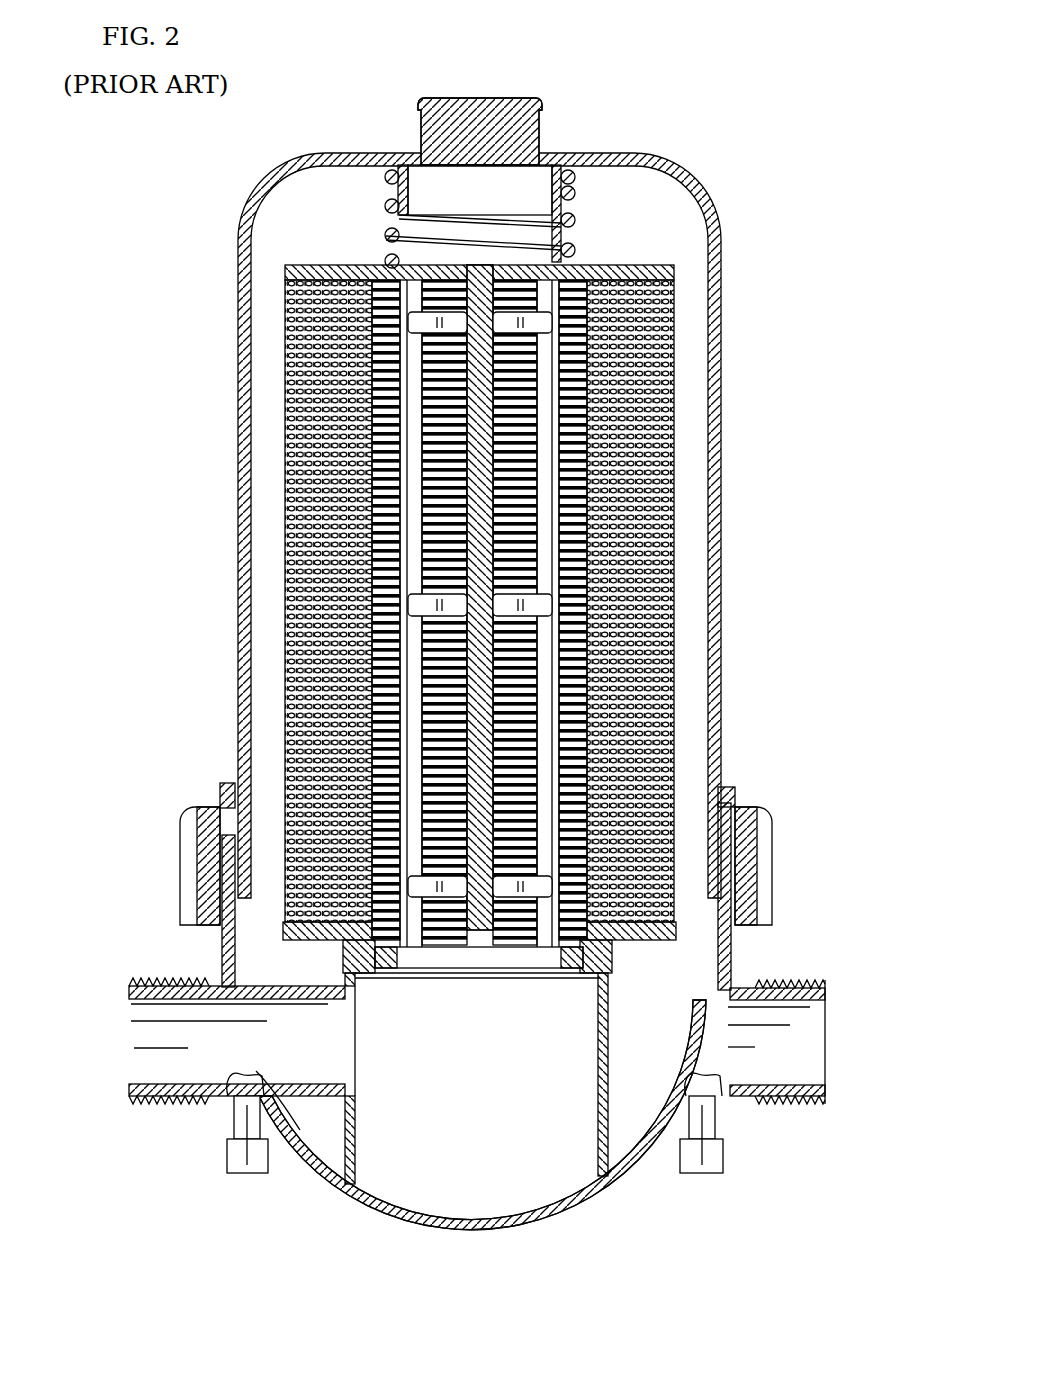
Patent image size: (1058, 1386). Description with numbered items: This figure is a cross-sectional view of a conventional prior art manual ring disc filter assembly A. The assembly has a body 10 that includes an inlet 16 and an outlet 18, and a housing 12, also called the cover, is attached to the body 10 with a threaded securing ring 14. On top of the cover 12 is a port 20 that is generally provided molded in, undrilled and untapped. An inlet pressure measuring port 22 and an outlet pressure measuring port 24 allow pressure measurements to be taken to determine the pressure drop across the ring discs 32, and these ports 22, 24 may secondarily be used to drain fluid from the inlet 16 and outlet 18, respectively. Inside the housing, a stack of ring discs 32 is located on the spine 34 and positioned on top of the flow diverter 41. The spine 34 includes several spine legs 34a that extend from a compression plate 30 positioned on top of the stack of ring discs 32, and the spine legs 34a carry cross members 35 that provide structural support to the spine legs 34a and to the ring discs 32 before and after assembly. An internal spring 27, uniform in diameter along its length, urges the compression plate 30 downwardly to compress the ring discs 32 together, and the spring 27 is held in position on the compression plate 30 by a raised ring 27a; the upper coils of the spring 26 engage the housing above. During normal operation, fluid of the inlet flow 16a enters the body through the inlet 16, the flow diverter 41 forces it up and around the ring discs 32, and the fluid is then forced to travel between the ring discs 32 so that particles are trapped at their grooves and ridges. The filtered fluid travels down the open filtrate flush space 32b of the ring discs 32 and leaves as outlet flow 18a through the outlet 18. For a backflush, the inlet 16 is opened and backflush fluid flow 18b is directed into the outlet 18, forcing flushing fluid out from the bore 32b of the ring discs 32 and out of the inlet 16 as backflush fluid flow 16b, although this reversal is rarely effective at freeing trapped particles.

The body 10 is at (362, 1195).
The housing 12 is at (713, 453).
The threaded securing ring 14 is at (745, 837).
The inlet 16 is at (830, 1100).
The inlet flow 16a is at (927, 1025).
The backflush fluid flow 16b is at (918, 1063).
The outlet 18 is at (155, 1098).
The outlet flow 18a is at (105, 1022).
The backflush fluid flow 18b is at (97, 1060).
The port 20 is at (505, 118).
The inlet pressure measuring port 22 is at (699, 1175).
The outlet pressure measuring port 24 is at (239, 1174).
The spring 26 is at (386, 200).
The internal spring 27 is at (380, 237).
The raised ring 27a is at (566, 262).
The compression plate 30 is at (643, 267).
The ring discs 32 is at (630, 530).
The filtrate flush space 32b is at (570, 407).
The spine 34 is at (268, 268).
The spine legs 34a is at (413, 420).
The cross members 35 is at (548, 612).
The flow diverter 41 is at (642, 935).
The manual ring disc filter assembly A is at (204, 559).